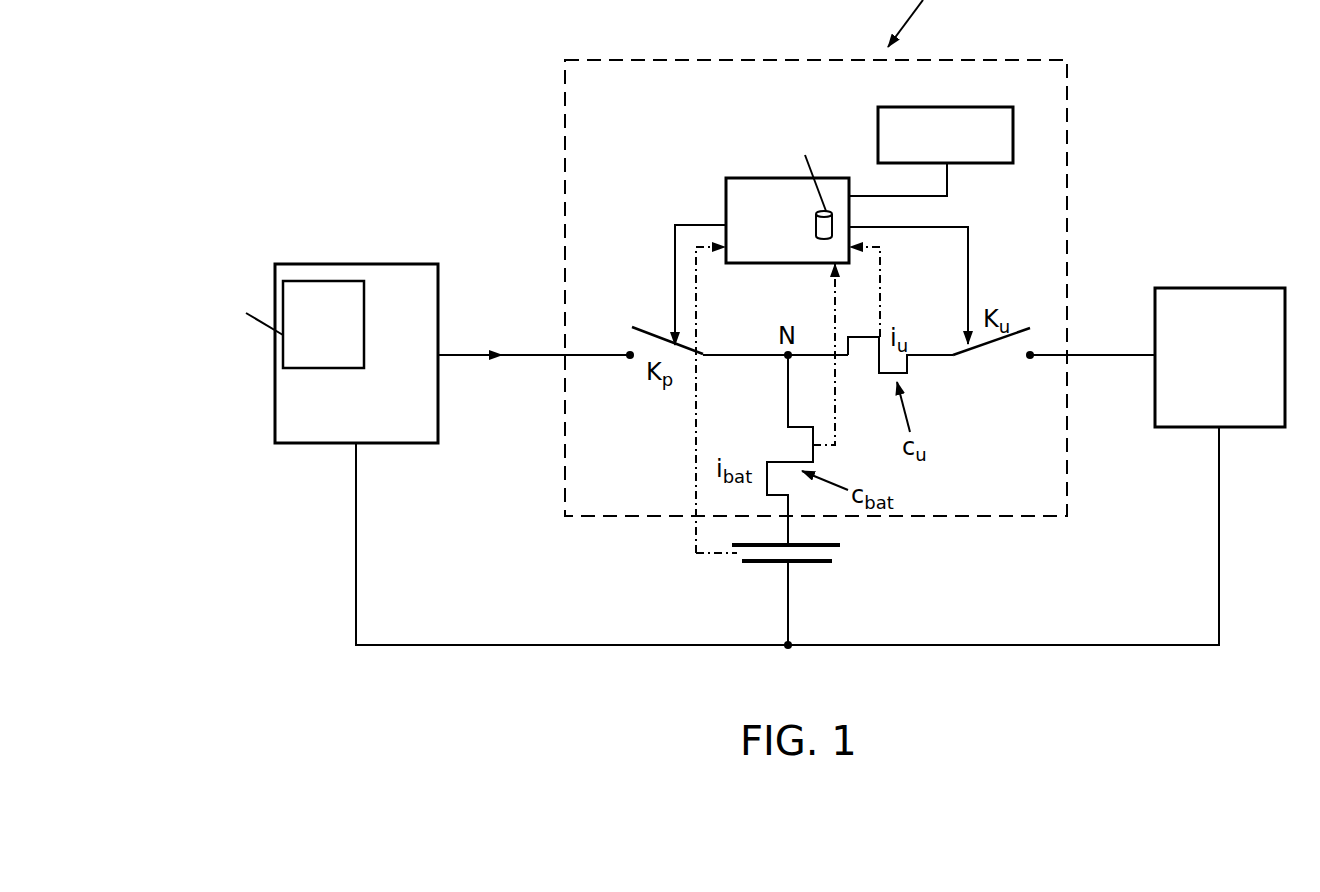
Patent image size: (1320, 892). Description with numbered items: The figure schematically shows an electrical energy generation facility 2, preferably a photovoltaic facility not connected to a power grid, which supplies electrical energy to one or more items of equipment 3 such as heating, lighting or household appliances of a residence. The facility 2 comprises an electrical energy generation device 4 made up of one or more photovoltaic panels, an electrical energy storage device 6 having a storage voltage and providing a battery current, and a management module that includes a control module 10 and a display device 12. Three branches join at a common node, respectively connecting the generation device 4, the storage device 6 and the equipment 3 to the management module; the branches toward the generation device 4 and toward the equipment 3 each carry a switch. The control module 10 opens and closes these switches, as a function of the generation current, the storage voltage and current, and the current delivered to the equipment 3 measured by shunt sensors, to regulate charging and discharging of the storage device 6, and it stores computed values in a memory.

The electrical energy generation facility 2 is at (1183, 160).
The equipment 3 is at (1252, 284).
The electrical energy generation device 4 is at (295, 233).
The electrical energy storage device 6 is at (775, 570).
The control module 10 is at (750, 176).
The display device 12 is at (960, 107).